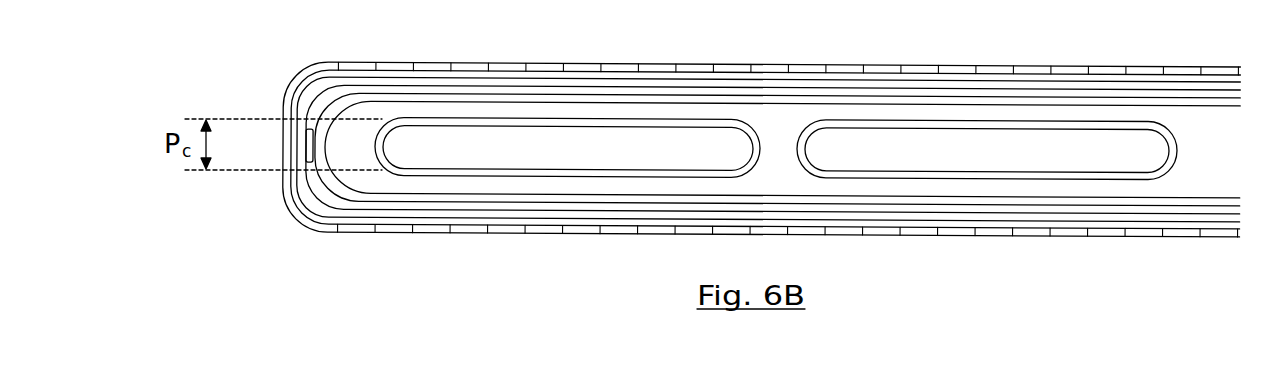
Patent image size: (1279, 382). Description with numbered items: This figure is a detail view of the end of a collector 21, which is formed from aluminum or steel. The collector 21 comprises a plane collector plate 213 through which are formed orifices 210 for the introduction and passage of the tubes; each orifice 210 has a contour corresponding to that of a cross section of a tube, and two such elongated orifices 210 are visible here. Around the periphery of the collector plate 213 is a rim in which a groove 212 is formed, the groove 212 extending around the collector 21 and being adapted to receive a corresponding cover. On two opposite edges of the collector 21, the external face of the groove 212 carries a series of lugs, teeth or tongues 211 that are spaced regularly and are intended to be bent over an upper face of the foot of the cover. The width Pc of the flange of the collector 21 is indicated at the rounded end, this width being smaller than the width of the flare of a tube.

The collector 21 is at (296, 221).
The orifice 210 is at (515, 155).
The lugs, teeth or tongues 211 is at (498, 62).
The groove 212 is at (308, 89).
The collector plate 213 is at (1186, 188).